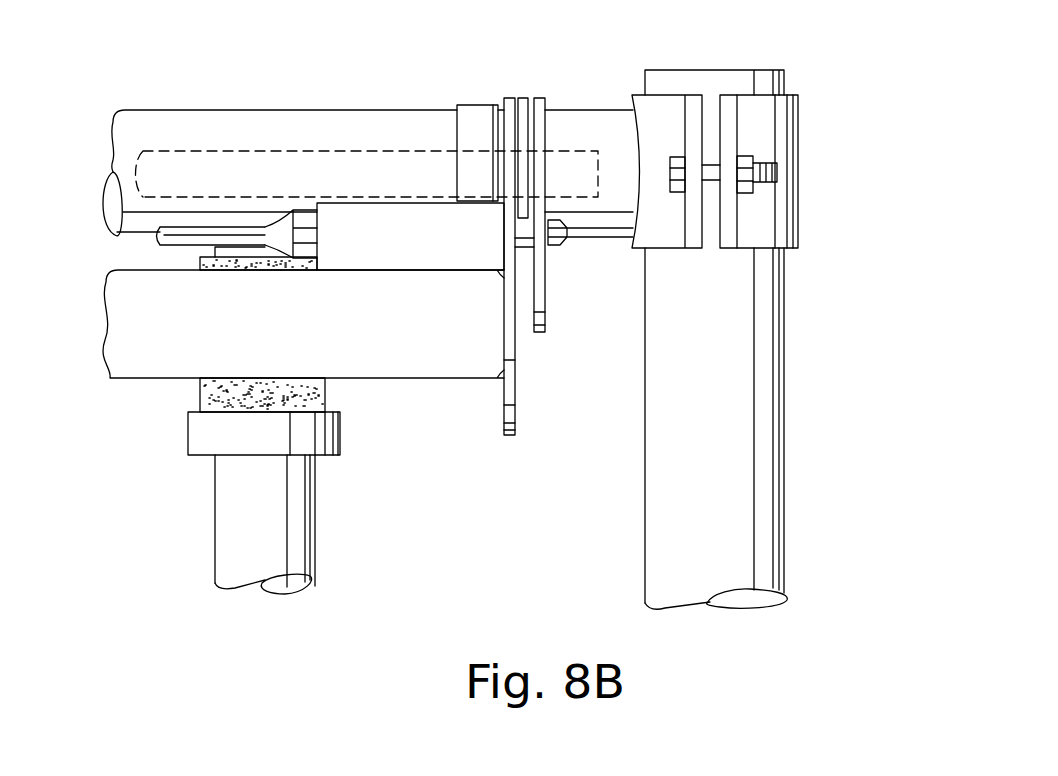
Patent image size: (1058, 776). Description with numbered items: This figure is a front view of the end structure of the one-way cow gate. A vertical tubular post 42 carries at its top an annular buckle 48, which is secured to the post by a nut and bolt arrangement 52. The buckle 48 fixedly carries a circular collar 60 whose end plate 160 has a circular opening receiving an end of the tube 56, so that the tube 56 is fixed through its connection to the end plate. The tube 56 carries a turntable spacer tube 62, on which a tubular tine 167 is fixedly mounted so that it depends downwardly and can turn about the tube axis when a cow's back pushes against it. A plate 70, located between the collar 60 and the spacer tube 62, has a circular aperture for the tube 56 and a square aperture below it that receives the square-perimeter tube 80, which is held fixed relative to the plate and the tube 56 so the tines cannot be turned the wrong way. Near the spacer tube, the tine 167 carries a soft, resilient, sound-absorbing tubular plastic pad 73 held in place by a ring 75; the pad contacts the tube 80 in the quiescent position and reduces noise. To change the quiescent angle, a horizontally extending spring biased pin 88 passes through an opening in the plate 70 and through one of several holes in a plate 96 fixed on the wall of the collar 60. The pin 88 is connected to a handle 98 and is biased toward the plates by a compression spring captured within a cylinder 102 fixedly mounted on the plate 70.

The vertical tubular post 42 is at (767, 323).
The annular buckle 48 is at (783, 222).
The nut and bolt arrangement 52 is at (750, 162).
The tube 56 is at (320, 153).
The circular collar 60 is at (602, 113).
The turntable spacer tube 62 is at (232, 118).
The plate 70 is at (518, 383).
The tubular plastic pad 73 is at (308, 395).
The ring 75 is at (323, 440).
The tube 80 is at (428, 365).
The spring biased pin 88 is at (553, 250).
The plate 96 is at (548, 318).
The handle 98 is at (175, 238).
The cylinder 102 is at (376, 213).
The end plate 160 is at (527, 98).
The tubular tine 167 is at (292, 518).